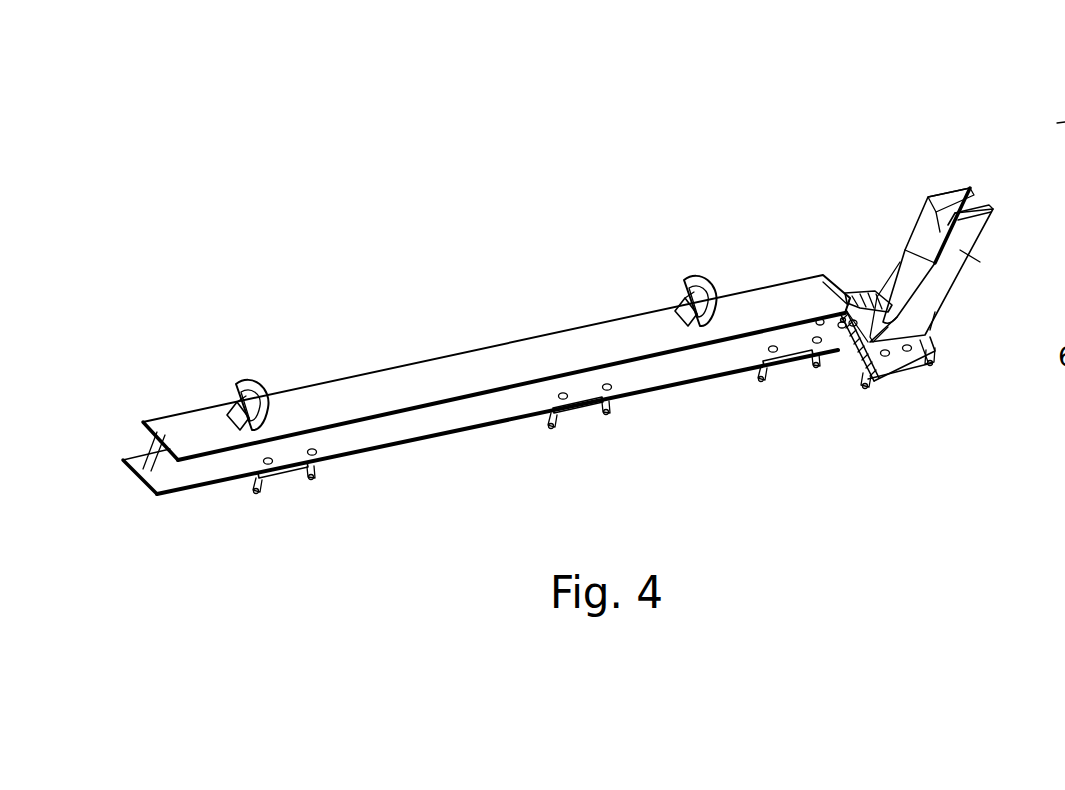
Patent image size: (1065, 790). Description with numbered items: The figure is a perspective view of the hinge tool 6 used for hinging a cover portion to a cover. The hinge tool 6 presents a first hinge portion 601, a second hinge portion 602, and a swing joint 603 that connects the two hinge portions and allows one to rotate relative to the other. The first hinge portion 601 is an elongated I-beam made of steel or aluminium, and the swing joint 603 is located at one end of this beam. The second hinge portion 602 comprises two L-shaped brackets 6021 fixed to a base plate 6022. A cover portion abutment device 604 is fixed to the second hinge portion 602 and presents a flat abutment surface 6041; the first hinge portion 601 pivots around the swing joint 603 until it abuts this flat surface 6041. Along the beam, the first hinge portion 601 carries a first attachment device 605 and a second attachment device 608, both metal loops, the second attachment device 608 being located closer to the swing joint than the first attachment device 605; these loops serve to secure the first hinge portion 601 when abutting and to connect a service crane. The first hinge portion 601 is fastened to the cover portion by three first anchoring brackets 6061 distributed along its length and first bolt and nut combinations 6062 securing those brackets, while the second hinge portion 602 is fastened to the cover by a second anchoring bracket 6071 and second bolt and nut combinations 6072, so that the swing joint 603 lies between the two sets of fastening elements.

The hinge tool 6 is at (594, 378).
The first hinge portion 601 is at (390, 427).
The second hinge portion 602 is at (930, 297).
The L-shaped brackets 6021 is at (960, 250).
The base plate 6022 is at (927, 363).
The swing joint 603 is at (877, 303).
The cover portion abutment device 604 is at (922, 258).
The flat abutment surface 6041 is at (937, 215).
The first attachment device 605 is at (243, 389).
The second attachment device 608 is at (690, 292).
The first anchoring brackets 6061 is at (282, 477).
The first bolt and nut combinations 6062 is at (264, 489).
The second anchoring bracket 6071 is at (893, 383).
The second bolt and nut combinations 6072 is at (878, 378).